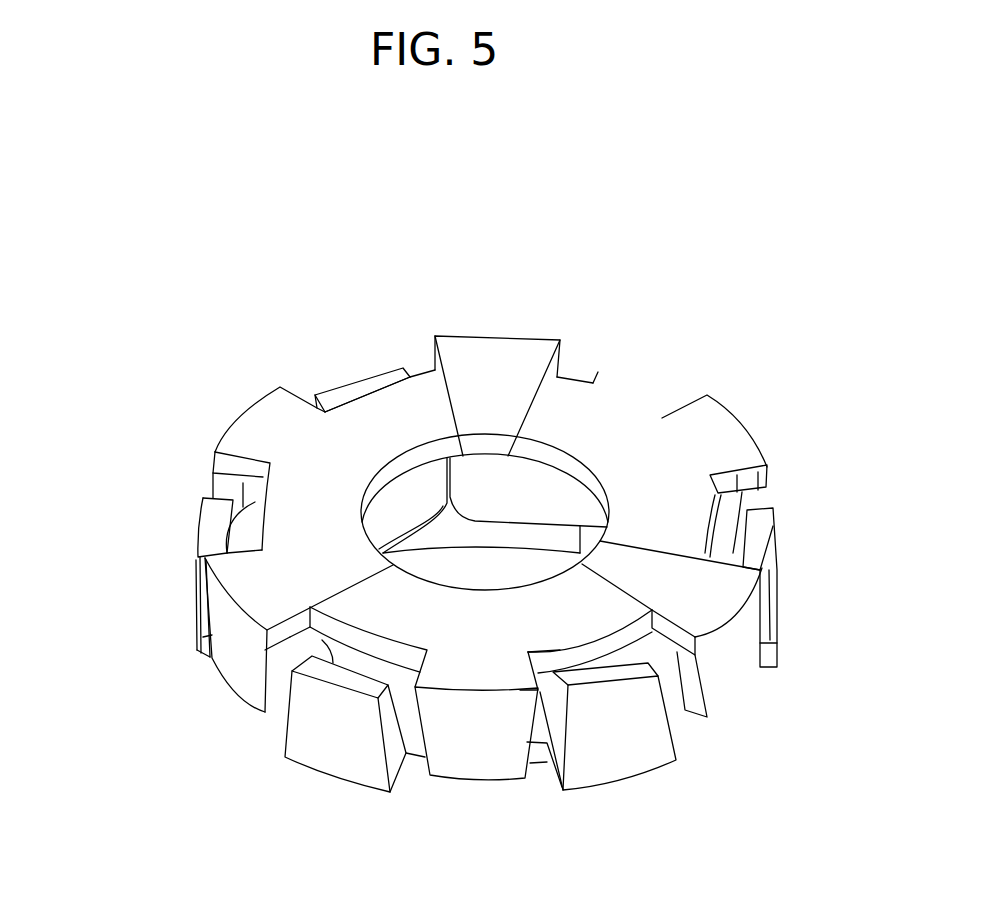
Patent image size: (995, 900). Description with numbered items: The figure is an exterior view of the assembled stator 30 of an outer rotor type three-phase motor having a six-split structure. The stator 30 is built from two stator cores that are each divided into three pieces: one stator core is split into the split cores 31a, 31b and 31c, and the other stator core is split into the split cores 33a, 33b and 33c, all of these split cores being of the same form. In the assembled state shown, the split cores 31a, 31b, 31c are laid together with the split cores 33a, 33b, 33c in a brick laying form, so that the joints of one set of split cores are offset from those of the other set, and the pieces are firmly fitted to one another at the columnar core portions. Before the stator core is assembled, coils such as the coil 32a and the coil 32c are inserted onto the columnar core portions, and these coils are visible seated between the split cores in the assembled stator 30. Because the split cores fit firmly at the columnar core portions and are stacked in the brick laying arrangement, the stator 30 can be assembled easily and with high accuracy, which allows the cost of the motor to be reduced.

The stator 30 is at (80, 342).
The split core 31a is at (380, 408).
The split core 31b is at (610, 405).
The split core 31c is at (660, 585).
The coil 32a is at (508, 473).
The coil 32c is at (673, 680).
The split core 33a is at (470, 533).
The split core 33b is at (397, 770).
The split core 33c is at (770, 620).